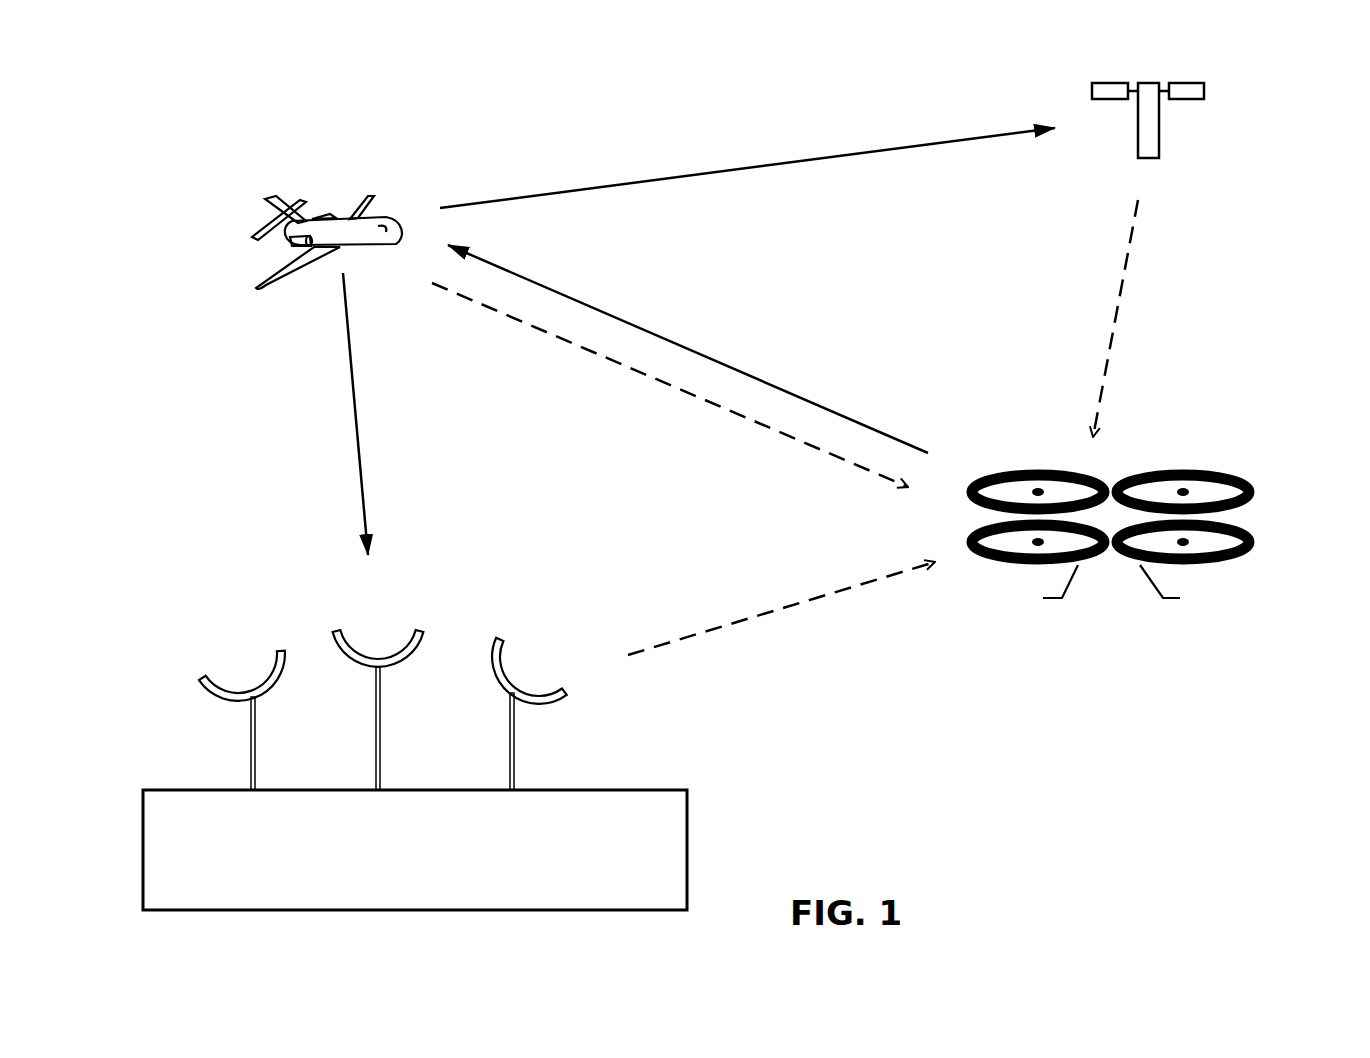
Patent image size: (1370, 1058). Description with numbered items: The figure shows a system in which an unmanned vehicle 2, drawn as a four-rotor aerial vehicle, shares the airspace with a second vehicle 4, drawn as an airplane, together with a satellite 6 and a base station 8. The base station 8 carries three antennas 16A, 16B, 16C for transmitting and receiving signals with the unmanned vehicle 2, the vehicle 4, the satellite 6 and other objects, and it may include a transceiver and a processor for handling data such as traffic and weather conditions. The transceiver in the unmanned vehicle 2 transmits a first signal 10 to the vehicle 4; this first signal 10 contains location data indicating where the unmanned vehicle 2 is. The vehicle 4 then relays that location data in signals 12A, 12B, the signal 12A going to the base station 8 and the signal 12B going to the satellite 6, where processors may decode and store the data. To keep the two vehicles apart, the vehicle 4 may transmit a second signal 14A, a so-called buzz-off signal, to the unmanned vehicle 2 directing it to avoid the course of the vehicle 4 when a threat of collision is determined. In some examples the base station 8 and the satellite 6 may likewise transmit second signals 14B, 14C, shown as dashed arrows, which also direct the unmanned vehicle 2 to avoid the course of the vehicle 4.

The unmanned vehicle 2 is at (1283, 467).
The second vehicle 4 is at (225, 270).
The satellite 6 is at (1232, 139).
The base station 8 is at (410, 873).
The first signal 10 is at (567, 298).
The signal 12A is at (353, 393).
The signal 12B is at (682, 172).
The second signal 14A is at (552, 332).
The second signal 14B is at (770, 608).
The second signal 14C is at (1113, 316).
The antenna 16A is at (268, 673).
The antenna 16B is at (347, 640).
The antenna 16C is at (538, 693).